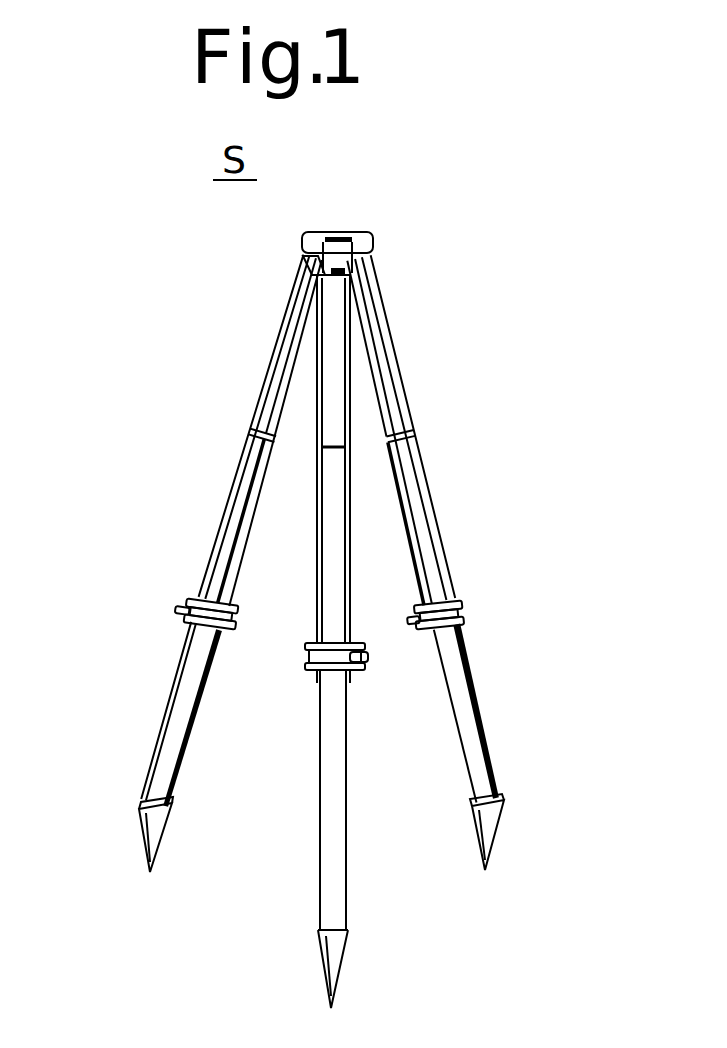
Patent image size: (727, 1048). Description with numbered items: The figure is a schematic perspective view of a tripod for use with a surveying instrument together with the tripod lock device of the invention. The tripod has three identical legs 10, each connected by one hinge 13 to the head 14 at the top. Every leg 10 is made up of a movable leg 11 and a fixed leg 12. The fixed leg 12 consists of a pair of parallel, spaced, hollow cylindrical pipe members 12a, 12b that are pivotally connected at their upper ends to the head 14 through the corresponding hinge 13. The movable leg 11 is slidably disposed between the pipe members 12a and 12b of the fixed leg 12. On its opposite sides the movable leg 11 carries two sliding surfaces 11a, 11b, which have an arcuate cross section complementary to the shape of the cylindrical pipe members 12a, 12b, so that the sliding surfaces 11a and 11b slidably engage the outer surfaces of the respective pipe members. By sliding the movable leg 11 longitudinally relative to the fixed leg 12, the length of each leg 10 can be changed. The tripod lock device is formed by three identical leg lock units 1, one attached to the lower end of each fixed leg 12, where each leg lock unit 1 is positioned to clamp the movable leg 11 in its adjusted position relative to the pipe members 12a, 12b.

The leg lock unit 1 is at (231, 638).
The leg 10 is at (323, 630).
The movable leg 11 is at (324, 815).
The sliding surface 11a is at (175, 778).
The sliding surface 11b is at (157, 773).
The fixed leg 12 is at (325, 468).
The pipe member 12a is at (242, 538).
The pipe member 12b is at (235, 585).
The hinge 13 is at (302, 261).
The head 14 is at (340, 231).